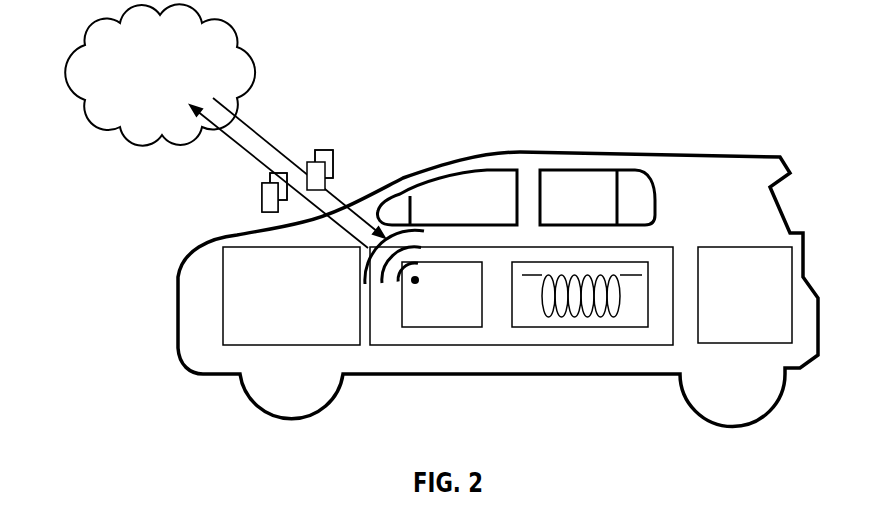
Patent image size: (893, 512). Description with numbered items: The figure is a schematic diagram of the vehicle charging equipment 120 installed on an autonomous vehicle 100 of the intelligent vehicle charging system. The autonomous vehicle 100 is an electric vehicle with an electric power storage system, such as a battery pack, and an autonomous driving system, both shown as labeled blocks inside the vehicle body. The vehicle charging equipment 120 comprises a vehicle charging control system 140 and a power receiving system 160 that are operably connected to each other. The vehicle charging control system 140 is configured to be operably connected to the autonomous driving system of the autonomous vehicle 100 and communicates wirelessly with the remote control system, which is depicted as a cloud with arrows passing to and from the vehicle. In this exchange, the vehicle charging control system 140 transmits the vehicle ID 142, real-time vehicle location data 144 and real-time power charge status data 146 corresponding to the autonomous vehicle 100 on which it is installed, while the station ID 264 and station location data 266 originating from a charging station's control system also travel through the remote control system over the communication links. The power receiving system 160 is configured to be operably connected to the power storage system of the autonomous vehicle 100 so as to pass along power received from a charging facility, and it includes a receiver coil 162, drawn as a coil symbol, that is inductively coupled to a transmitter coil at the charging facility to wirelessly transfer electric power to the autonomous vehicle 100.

The autonomous vehicle 100 is at (740, 154).
The vehicle charging equipment 120 is at (382, 335).
The vehicle charging control system 140 is at (447, 318).
The vehicle ID 142 is at (235, 175).
The real-time vehicle location data 144 is at (230, 194).
The real-time power charge status data 146 is at (262, 197).
The power receiving system 160 is at (527, 318).
The receiver coil 162 is at (615, 318).
The station ID 264 is at (363, 143).
The station location data 266 is at (333, 167).